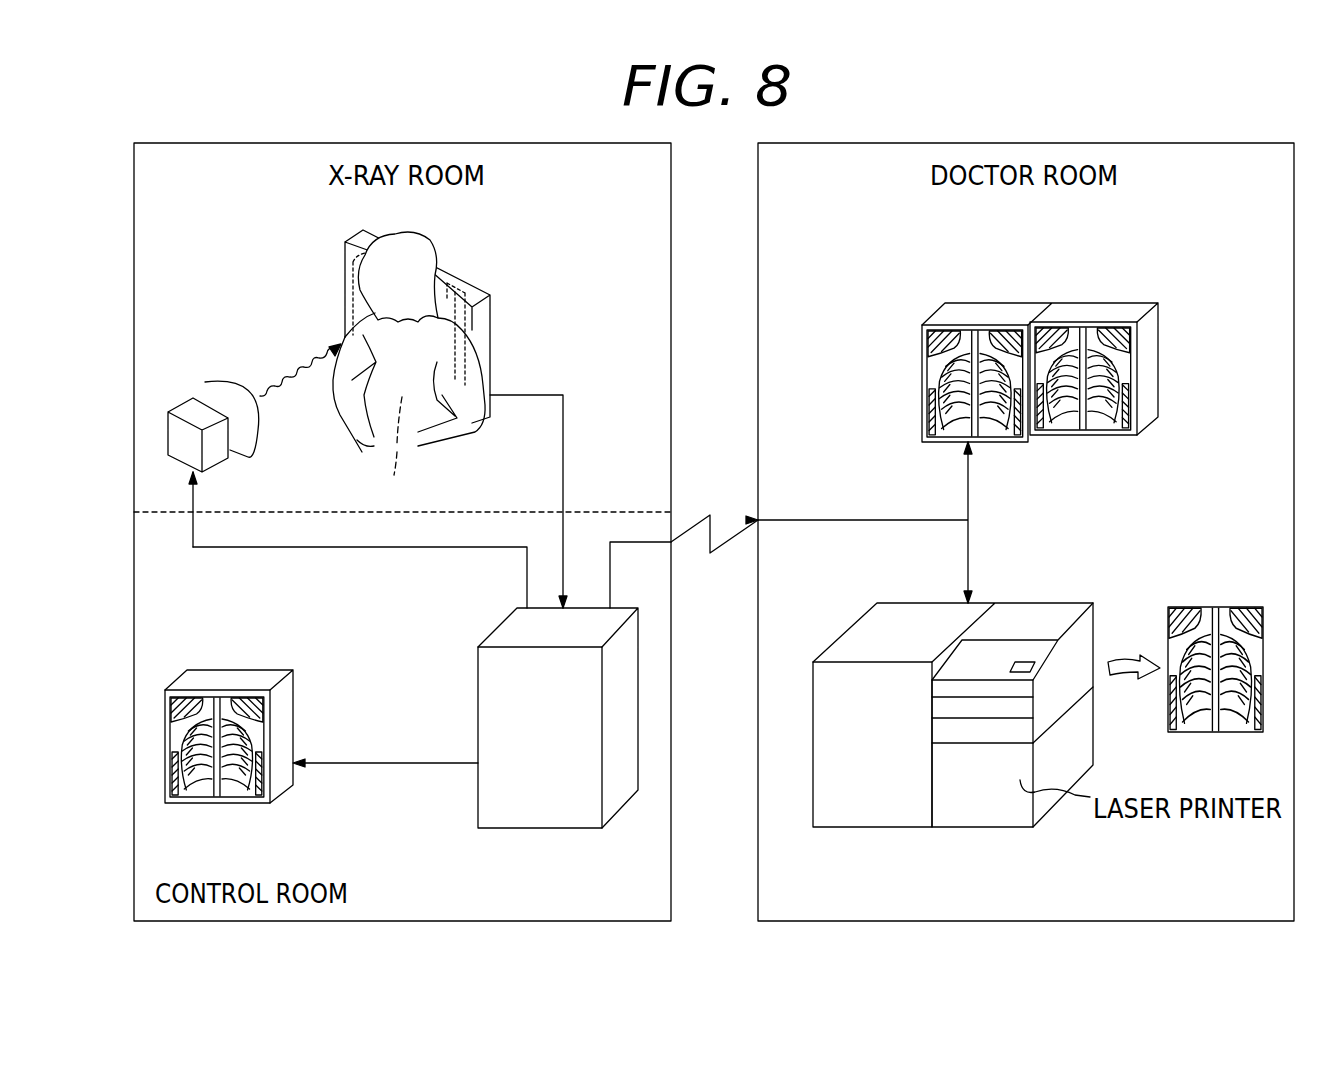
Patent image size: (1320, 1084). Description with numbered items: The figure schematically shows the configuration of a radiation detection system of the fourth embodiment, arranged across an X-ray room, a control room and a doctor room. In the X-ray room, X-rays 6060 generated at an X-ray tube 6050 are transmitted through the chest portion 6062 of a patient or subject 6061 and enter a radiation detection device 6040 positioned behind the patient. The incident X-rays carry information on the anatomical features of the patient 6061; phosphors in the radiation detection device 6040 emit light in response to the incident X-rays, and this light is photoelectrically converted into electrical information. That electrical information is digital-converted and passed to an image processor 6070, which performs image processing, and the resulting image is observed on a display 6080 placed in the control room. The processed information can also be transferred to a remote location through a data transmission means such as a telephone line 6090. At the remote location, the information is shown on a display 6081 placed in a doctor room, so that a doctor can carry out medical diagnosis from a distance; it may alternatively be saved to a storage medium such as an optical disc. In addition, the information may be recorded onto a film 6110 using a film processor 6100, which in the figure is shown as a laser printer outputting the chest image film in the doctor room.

The radiation detection device 6040 is at (490, 318).
The X-ray tube 6050 is at (190, 406).
The X-rays 6060 is at (302, 364).
The patient or subject 6061 is at (430, 243).
The chest portion 6062 is at (409, 408).
The image processor 6070 is at (509, 817).
The display 6080 is at (228, 672).
The display 6081 is at (990, 303).
The telephone line 6090 is at (707, 515).
The film processor 6100 is at (838, 815).
The film 6110 is at (1226, 607).